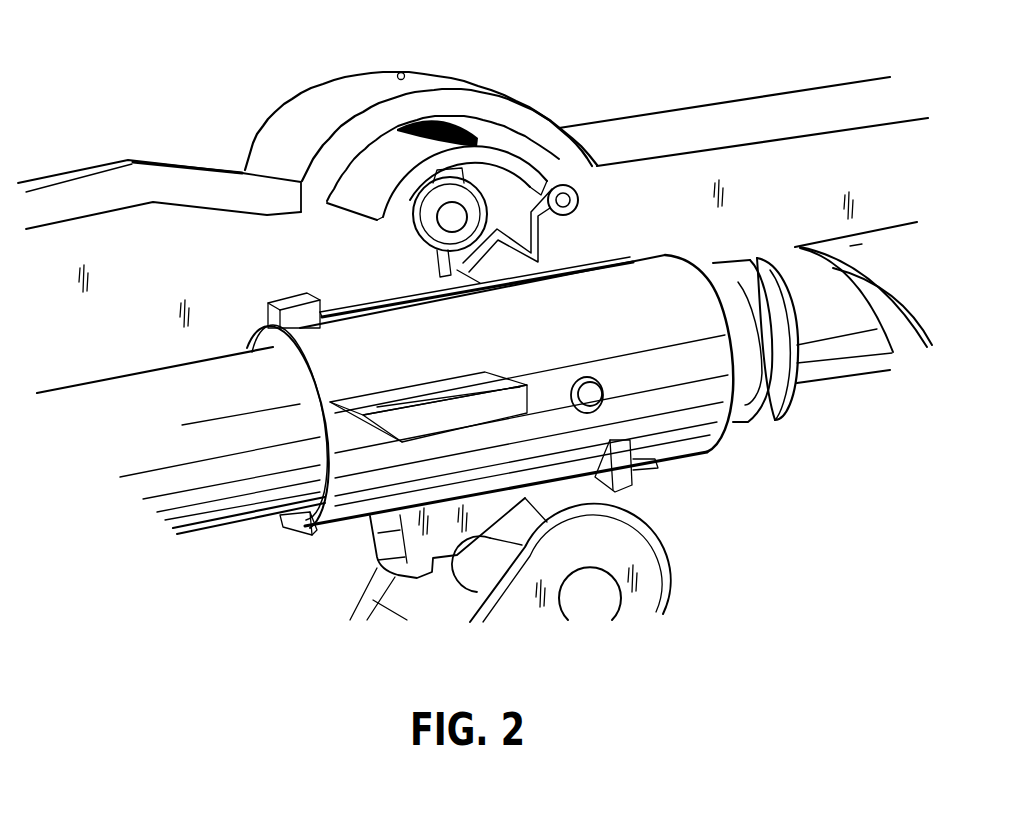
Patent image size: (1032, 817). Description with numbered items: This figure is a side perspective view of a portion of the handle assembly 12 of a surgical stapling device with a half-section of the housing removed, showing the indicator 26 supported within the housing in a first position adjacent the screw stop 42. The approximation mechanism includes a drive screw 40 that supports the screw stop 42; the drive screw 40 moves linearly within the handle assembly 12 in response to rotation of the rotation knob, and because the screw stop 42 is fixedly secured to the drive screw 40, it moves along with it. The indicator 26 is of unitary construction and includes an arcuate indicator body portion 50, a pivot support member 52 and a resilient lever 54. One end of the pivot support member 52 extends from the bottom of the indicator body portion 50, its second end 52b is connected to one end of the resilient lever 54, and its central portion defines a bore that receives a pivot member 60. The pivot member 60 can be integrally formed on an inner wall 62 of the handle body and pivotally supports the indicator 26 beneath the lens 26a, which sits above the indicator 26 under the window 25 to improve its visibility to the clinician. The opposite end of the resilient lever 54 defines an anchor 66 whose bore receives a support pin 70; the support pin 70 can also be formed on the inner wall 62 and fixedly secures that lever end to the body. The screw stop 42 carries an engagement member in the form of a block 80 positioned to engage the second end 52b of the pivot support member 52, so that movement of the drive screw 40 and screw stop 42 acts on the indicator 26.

The handle assembly 12 is at (598, 112).
The window 25 is at (405, 76).
The indicator 26 is at (483, 127).
The lens 26a is at (342, 100).
The drive screw 40 is at (813, 413).
The screw stop 42 is at (663, 253).
The indicator body portion 50 is at (510, 147).
The pivot support member 52 is at (415, 235).
The second end of the pivot support member 52b is at (457, 278).
The resilient lever 54 is at (540, 237).
The pivot member 60 is at (453, 213).
The inner wall 62 is at (203, 233).
The anchor 66 is at (578, 200).
The support pin 70 is at (572, 188).
The block 80 is at (293, 313).